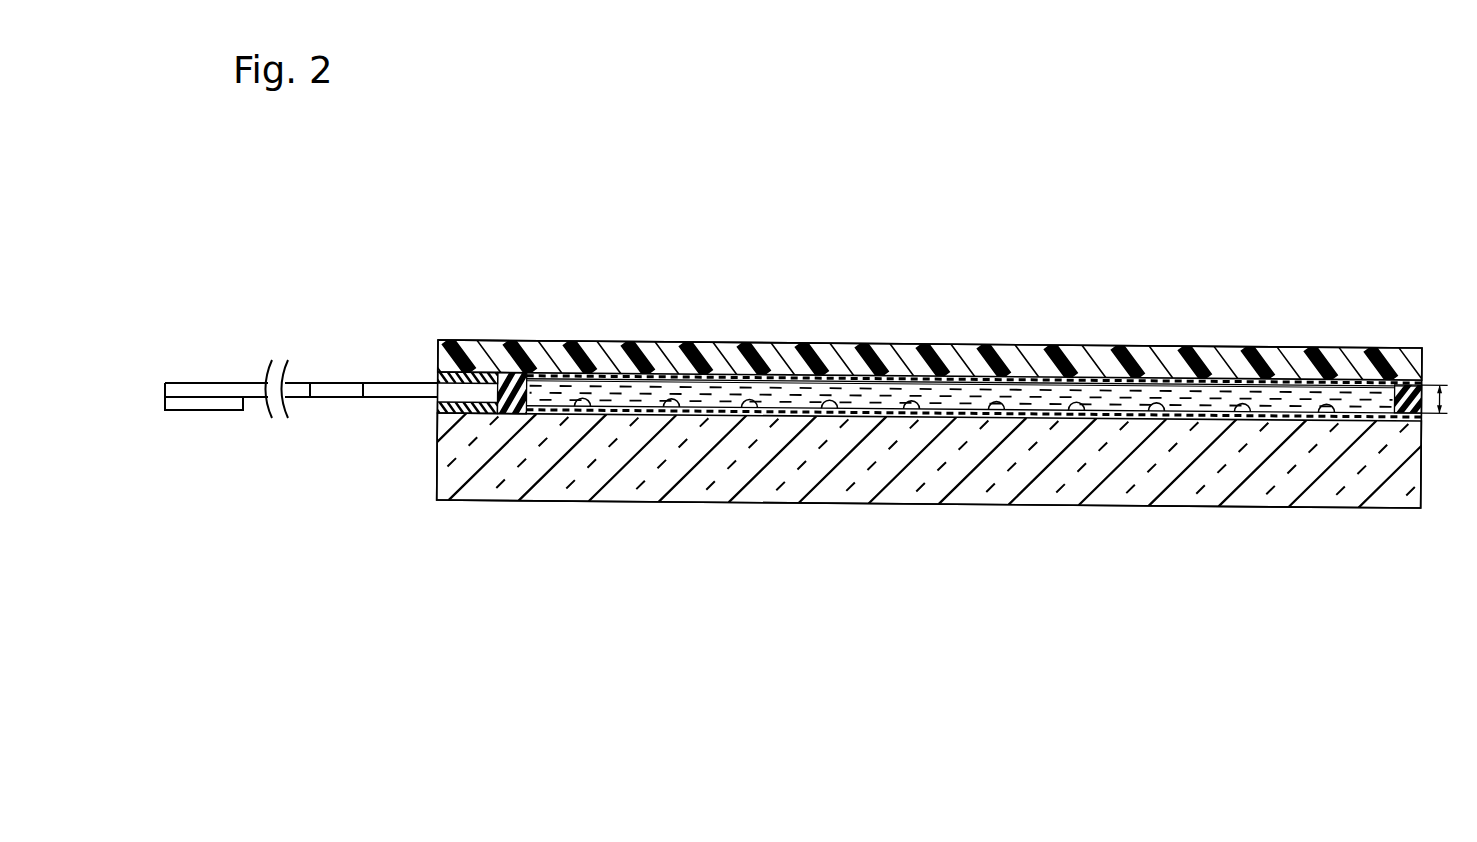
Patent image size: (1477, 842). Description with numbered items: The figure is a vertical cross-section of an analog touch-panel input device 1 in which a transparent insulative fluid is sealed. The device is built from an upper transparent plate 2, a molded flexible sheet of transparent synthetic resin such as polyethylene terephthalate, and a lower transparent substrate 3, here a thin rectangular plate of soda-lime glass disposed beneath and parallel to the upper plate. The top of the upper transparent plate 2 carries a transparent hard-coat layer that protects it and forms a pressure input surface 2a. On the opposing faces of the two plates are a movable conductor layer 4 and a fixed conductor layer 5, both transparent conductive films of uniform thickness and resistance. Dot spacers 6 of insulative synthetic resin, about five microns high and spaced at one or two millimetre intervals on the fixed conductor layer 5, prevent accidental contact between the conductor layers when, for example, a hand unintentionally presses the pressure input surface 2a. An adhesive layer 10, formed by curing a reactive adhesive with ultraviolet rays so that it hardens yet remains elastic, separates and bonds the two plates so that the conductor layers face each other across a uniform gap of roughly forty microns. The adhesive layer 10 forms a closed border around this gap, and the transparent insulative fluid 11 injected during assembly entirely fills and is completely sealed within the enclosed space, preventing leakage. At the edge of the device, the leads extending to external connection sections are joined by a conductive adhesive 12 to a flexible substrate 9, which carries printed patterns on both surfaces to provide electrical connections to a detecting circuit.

The touch-panel input device 1 is at (971, 279).
The upper transparent plate 2 is at (1258, 362).
The pressure input surface 2a is at (1142, 340).
The lower transparent substrate 3 is at (1272, 467).
The movable conductor layer 4 is at (797, 380).
The fixed conductor layer 5 is at (862, 418).
The dot spacers 6 is at (672, 400).
The flexible substrate 9 is at (217, 388).
The adhesive layer 10 is at (540, 342).
The transparent insulative fluid 11 is at (1035, 405).
The conductive adhesive 12 is at (478, 342).